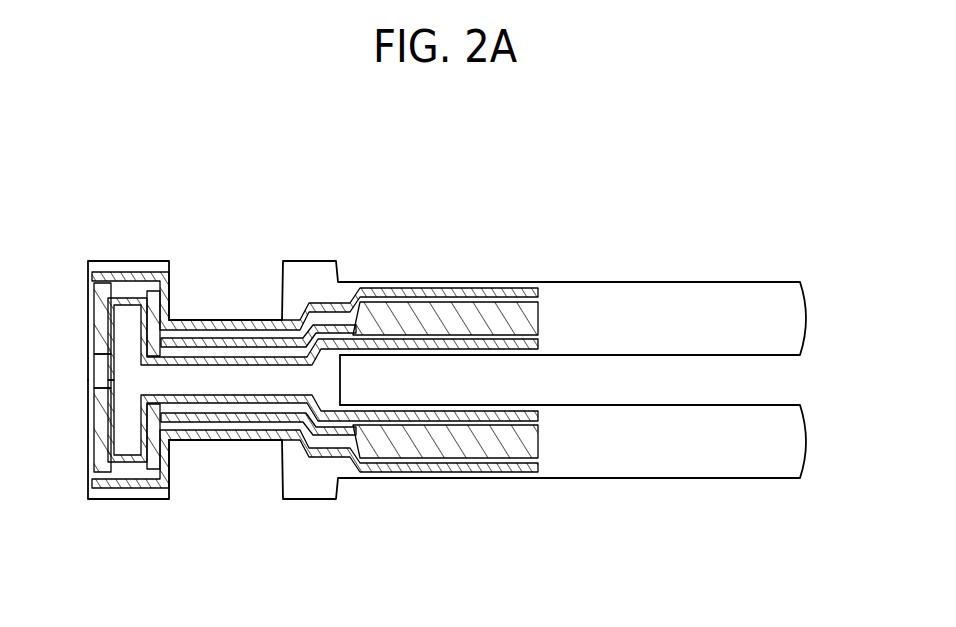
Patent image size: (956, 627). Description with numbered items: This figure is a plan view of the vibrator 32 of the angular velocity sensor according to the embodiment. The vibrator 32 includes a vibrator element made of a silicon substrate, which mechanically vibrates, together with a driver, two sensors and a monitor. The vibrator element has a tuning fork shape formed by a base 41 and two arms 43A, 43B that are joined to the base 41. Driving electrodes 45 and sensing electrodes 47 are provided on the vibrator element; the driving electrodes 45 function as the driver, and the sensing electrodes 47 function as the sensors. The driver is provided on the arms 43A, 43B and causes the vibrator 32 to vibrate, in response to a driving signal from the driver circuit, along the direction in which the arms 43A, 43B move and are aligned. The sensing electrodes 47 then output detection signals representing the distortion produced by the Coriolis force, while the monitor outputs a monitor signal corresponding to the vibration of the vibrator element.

The vibrator 32 is at (660, 257).
The base 41 is at (122, 492).
The arm 43A is at (617, 455).
The arm 43B is at (727, 328).
The driving electrodes 45 is at (480, 318).
The sensing electrodes 47 is at (393, 347).